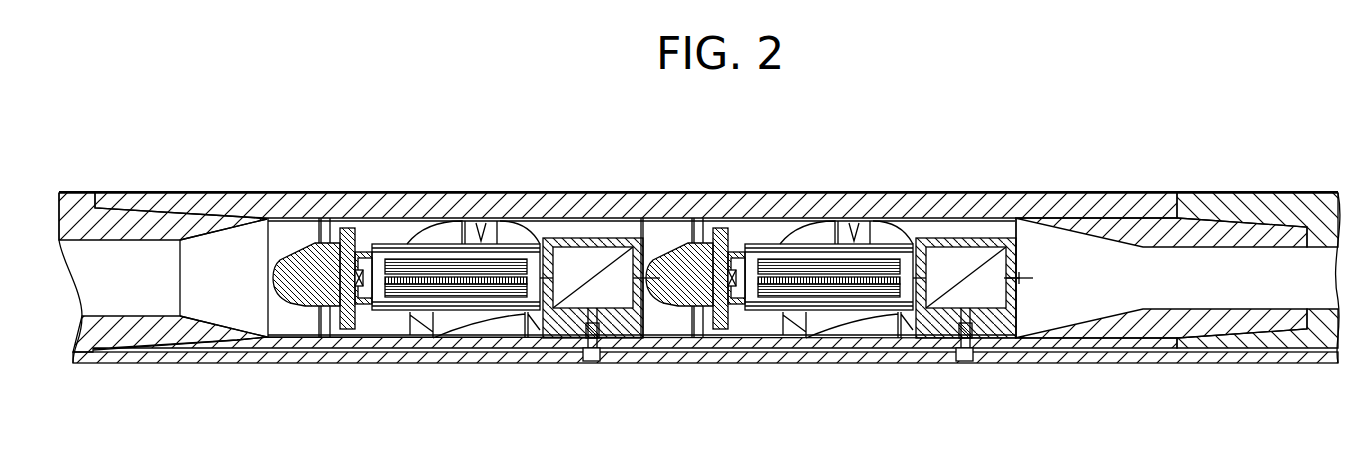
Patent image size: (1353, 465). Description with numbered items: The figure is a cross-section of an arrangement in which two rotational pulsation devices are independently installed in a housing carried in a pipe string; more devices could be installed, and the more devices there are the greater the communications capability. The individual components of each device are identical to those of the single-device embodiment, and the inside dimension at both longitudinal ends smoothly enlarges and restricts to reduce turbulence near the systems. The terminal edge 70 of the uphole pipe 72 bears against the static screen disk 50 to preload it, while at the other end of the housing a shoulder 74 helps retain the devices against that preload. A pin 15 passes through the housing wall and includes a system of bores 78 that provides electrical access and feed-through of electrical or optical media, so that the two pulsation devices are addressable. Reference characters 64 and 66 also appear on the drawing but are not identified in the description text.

The uphole pipe 72 is at (80, 211).
The tapered inlet 64 is at (203, 247).
The terminal edge 70 is at (270, 222).
The static screen disk 50 is at (318, 223).
The shoulder 74 is at (1017, 217).
The end coupling 66 is at (1088, 247).
The system of bores 78 is at (592, 355).
The pin 15 is at (597, 360).